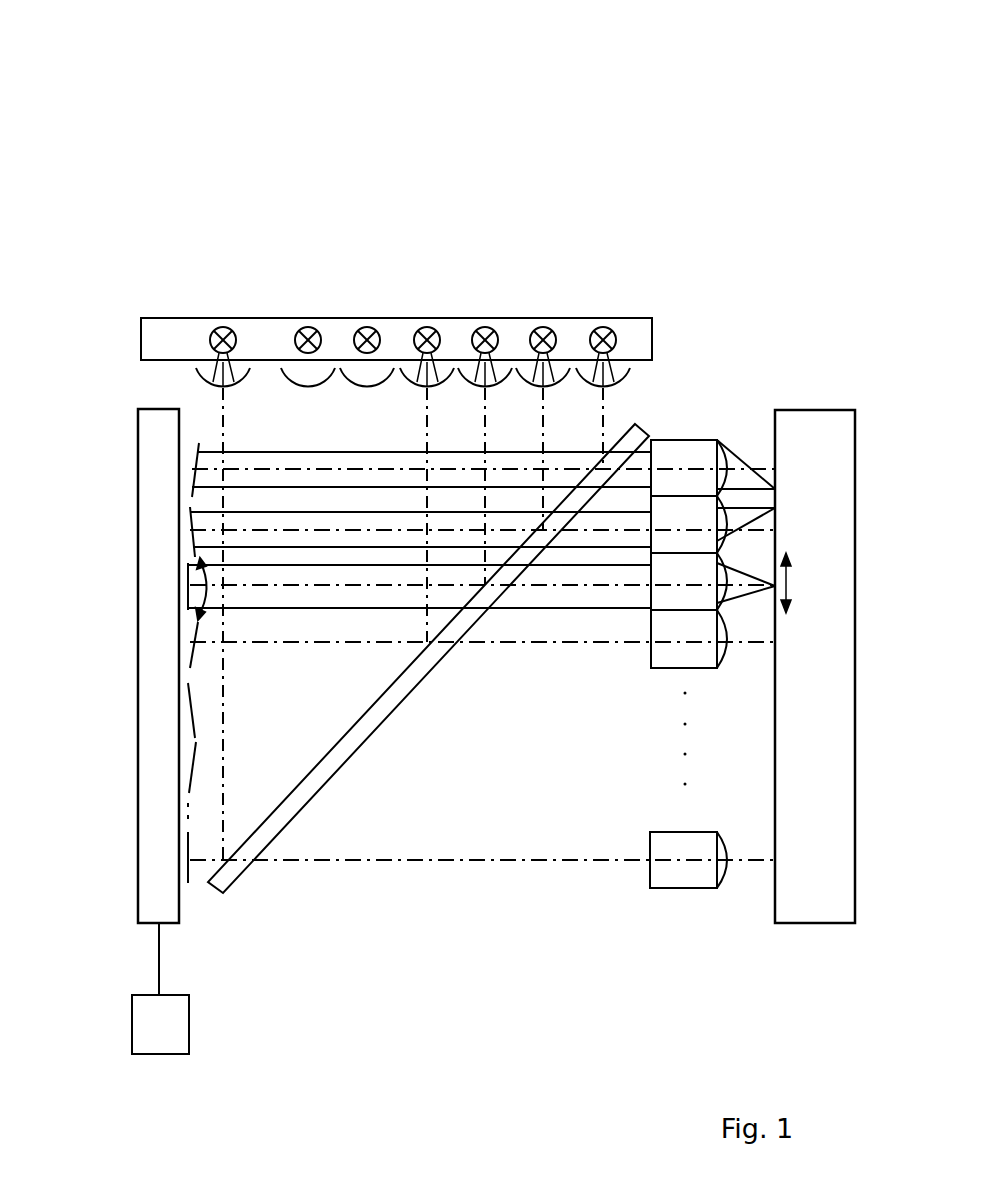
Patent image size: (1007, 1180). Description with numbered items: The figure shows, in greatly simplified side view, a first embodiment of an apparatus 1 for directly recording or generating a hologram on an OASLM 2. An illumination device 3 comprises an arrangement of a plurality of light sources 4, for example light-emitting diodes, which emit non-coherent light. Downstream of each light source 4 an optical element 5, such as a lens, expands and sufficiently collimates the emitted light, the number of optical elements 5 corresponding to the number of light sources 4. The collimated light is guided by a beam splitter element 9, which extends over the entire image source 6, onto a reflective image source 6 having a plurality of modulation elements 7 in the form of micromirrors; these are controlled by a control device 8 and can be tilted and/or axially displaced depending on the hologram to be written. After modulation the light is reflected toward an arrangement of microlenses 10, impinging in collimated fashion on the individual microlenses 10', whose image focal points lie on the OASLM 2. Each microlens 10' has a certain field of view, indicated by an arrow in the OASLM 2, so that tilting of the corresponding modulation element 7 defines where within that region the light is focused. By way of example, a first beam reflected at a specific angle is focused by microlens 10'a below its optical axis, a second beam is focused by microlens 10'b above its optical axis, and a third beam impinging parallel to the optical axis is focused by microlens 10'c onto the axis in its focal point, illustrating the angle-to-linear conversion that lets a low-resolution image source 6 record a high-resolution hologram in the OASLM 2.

The apparatus 1 is at (449, 531).
The OASLM 2 is at (820, 440).
The illumination device 3 is at (160, 294).
The light sources 4 is at (227, 328).
The optical elements 5 is at (203, 372).
The image source 6 is at (157, 840).
The modulation elements 7 is at (196, 462).
The control device 8 is at (160, 988).
The beam splitter element 9 is at (643, 420).
The arrangement of microlenses 10 is at (686, 868).
The microlens 10' is at (720, 930).
The microlens 10'a is at (713, 468).
The microlens 10'b is at (713, 524).
The microlens 10'c is at (713, 581).